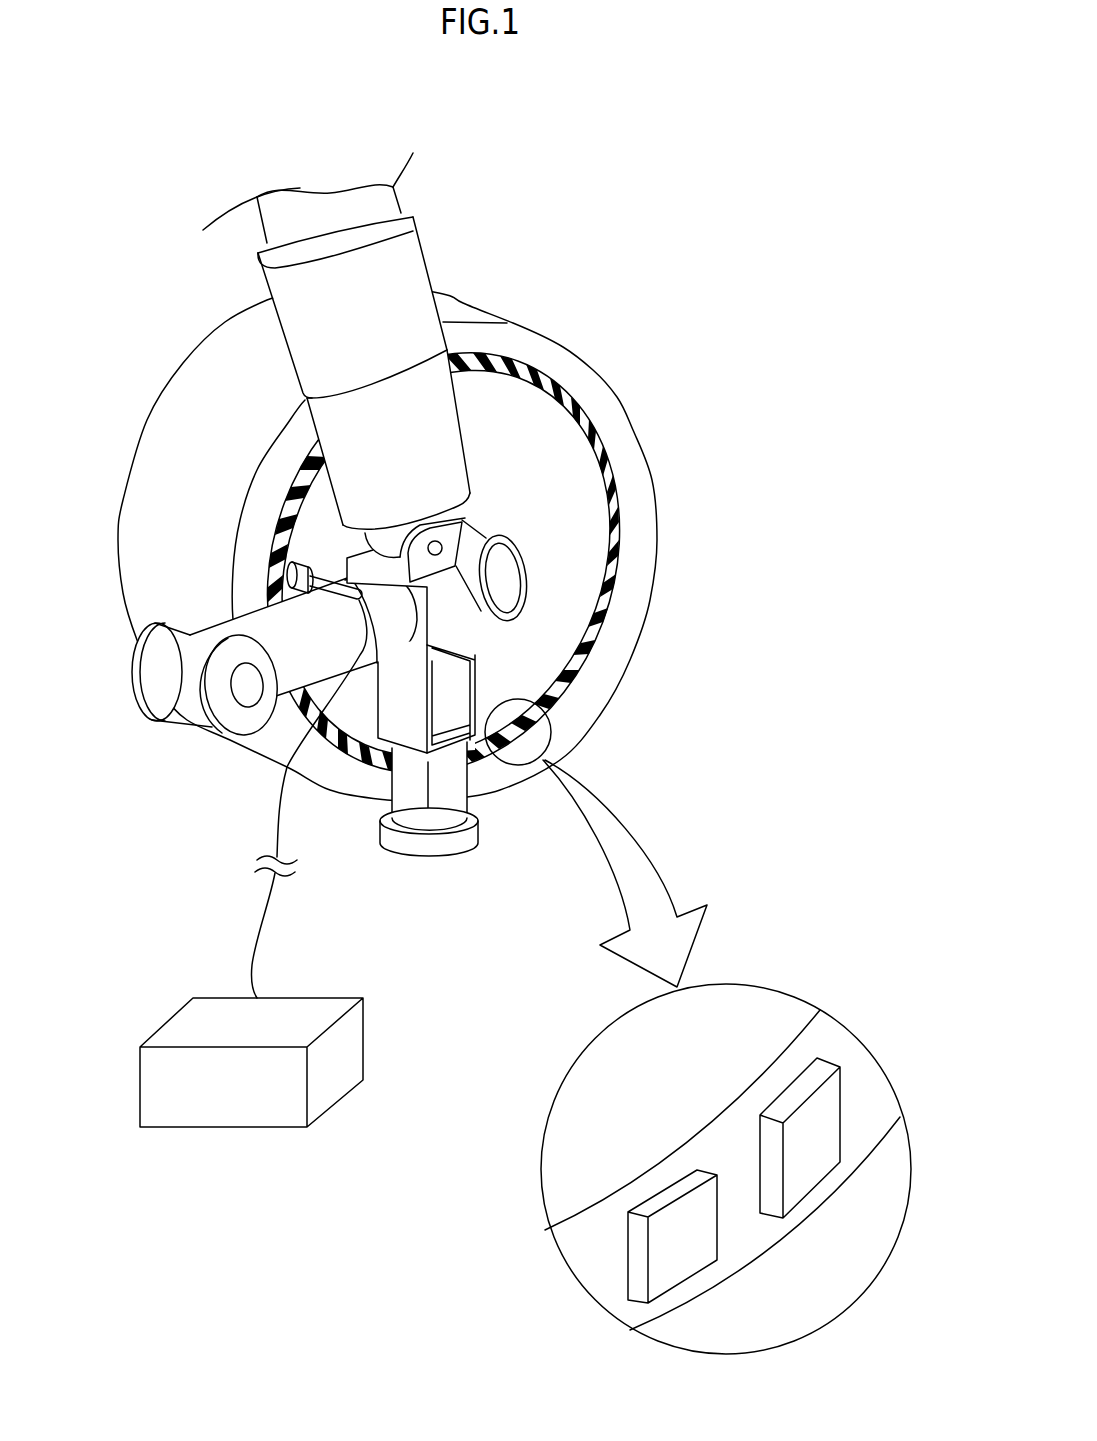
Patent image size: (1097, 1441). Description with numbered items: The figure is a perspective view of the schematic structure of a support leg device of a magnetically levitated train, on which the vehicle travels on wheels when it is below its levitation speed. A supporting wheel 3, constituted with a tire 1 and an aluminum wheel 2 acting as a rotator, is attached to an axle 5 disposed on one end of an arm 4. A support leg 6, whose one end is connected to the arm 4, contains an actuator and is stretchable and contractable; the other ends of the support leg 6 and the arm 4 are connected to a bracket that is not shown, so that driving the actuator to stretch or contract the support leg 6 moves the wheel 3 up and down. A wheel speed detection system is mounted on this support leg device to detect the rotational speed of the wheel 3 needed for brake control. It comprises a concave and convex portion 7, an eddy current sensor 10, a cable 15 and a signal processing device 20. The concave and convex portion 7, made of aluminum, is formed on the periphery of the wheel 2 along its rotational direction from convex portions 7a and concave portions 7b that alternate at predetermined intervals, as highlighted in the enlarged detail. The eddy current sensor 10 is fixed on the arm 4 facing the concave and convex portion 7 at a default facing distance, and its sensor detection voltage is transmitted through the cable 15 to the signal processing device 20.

The tire 1 is at (554, 816).
The wheel 2 is at (540, 447).
The wheel 3 is at (509, 803).
The arm 4 is at (287, 635).
The axle 5 is at (507, 573).
The support leg 6 is at (400, 262).
The concave and convex portion 7 is at (593, 671).
The convex portions 7a is at (830, 1107).
The concave portions 7b is at (738, 1157).
The eddy current sensor 10 is at (300, 493).
The cable 15 is at (260, 920).
The signal processing device 20 is at (363, 1047).